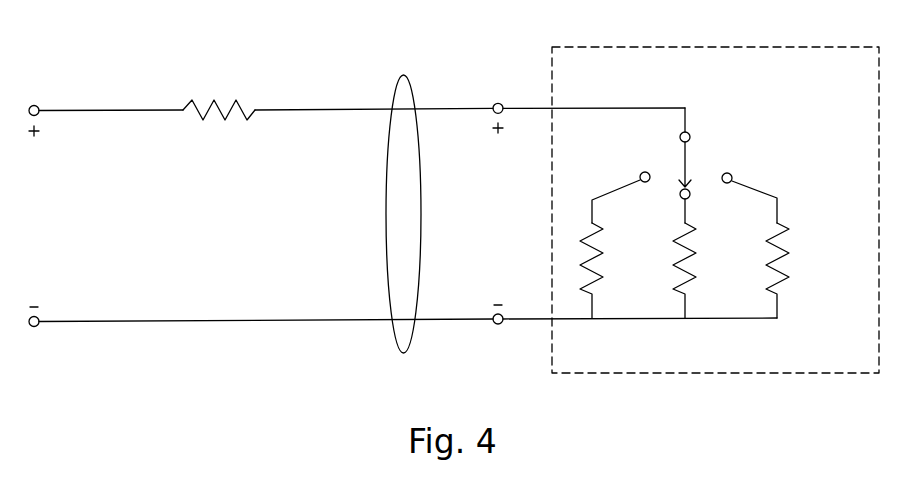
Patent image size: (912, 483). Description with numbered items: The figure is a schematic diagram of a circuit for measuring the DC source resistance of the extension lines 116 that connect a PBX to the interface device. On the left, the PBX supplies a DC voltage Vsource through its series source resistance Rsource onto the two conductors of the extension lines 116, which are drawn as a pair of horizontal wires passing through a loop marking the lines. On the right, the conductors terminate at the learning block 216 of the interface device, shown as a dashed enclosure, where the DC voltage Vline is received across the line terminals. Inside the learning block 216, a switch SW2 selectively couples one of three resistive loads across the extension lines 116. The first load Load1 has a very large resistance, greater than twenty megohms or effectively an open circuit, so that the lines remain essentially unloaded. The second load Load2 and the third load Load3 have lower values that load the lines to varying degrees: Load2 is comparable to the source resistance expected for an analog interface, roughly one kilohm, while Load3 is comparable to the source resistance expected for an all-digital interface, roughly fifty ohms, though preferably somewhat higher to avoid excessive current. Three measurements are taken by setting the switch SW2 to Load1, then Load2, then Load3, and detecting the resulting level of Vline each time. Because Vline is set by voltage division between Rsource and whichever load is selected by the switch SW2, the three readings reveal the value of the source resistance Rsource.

The extension lines 116 is at (395, 77).
The learning block 216 is at (715, 210).
The DC source voltage Vsource is at (39, 216).
The source resistance Rsource is at (220, 90).
The line voltage Vline is at (501, 213).
The switch SW2 is at (717, 165).
The first load Load1 is at (623, 245).
The second load Load2 is at (717, 270).
The third load Load3 is at (787, 245).